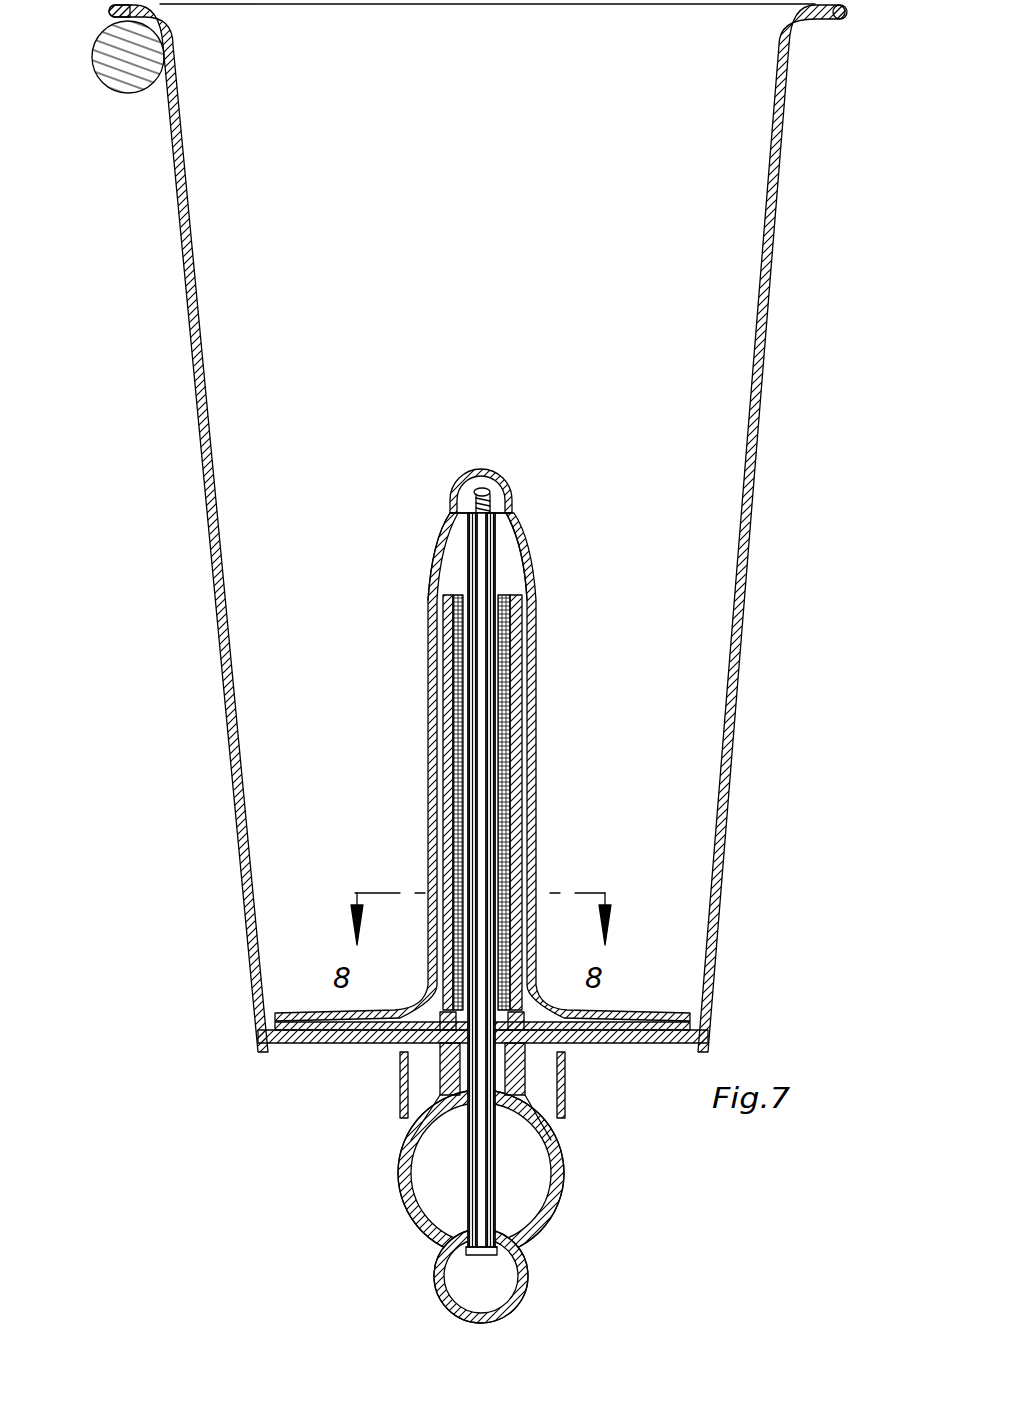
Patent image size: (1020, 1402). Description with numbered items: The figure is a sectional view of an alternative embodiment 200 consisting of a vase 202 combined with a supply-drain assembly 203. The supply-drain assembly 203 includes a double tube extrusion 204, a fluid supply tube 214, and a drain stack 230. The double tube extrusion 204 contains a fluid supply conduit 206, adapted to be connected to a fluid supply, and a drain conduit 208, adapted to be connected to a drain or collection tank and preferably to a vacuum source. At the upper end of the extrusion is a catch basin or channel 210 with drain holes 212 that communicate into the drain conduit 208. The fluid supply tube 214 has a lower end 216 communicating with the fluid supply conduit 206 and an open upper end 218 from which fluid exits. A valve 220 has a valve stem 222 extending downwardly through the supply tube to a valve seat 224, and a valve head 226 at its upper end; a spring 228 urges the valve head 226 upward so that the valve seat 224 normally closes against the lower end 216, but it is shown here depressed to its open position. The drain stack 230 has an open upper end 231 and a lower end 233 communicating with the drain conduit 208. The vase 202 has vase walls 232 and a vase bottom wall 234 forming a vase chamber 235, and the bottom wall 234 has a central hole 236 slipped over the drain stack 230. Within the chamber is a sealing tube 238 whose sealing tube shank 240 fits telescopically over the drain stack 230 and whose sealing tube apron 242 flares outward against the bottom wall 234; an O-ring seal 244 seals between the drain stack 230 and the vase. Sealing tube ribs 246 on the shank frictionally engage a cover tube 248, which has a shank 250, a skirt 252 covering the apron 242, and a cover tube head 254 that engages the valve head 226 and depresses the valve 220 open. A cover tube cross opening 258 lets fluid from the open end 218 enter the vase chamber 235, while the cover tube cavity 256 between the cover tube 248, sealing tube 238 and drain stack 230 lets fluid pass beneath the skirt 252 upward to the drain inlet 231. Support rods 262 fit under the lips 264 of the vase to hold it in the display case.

The alternative embodiment 200 is at (150, 233).
The vase 202 is at (178, 253).
The supply-drain assembly 203 is at (460, 595).
The double tube extrusion 204 is at (410, 1152).
The fluid supply conduit 206 is at (470, 1287).
The drain conduit 208 is at (440, 1190).
The catch basin or channel 210 is at (412, 1058).
The drain holes 212 is at (405, 1101).
The fluid supply tube 214 is at (498, 1151).
The lower end of fluid supply tube 216 is at (486, 1256).
The open upper end of fluid supply tube 218 is at (506, 536).
The valve 220 is at (492, 1178).
The valve stem 222 is at (488, 1186).
The valve seat 224 is at (486, 1252).
The valve head 226 is at (491, 487).
The spring 228 is at (497, 509).
The drain stack 230 is at (521, 593).
The open upper end of drain stack 231 is at (507, 587).
The vase walls 232 is at (240, 861).
The lower end of drain stack 233 is at (440, 1126).
The vase bottom wall 234 is at (300, 1044).
The vase chamber 235 is at (232, 307).
The central hole or opening 236 is at (499, 1076).
The sealing tube 238 is at (445, 681).
The sealing tube shank 240 is at (455, 716).
The sealing tube apron 242 is at (345, 1018).
The O-ring seal 244 is at (445, 1015).
The sealing tube ribs 246 is at (440, 912).
The cover tube 248 is at (430, 757).
The cover tube shank 250 is at (482, 767).
The cover tube skirt 252 is at (340, 1026).
The cover tube head 254 is at (480, 480).
The cover tube cavity 256 is at (430, 628).
The cover tube cross opening 258 is at (455, 507).
The support rods 262 is at (122, 94).
The lips 264 is at (116, 12).